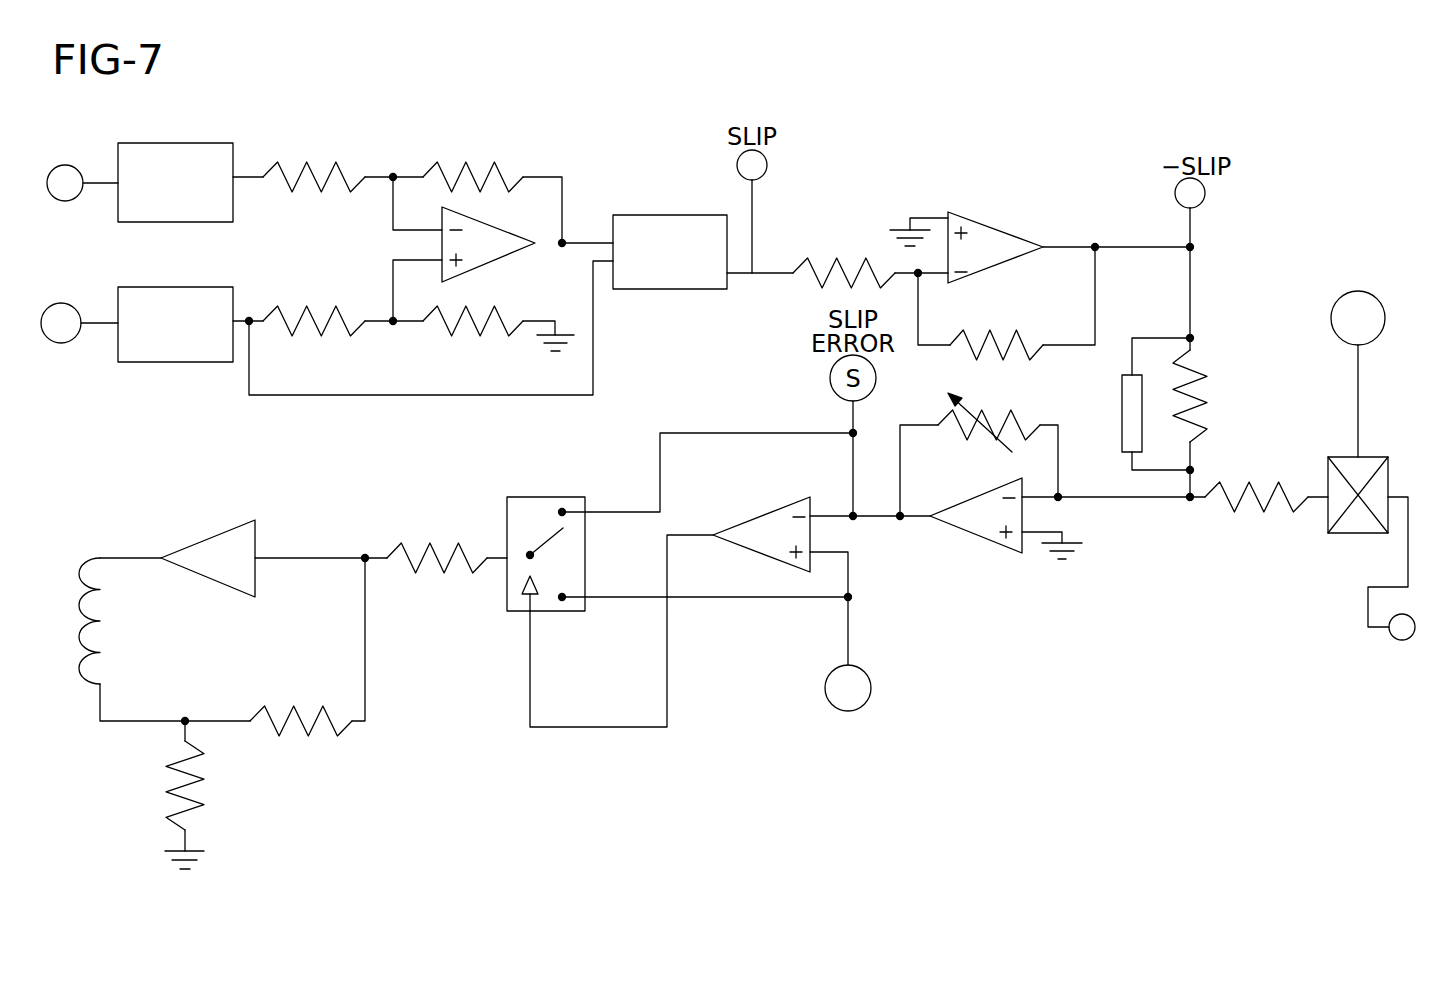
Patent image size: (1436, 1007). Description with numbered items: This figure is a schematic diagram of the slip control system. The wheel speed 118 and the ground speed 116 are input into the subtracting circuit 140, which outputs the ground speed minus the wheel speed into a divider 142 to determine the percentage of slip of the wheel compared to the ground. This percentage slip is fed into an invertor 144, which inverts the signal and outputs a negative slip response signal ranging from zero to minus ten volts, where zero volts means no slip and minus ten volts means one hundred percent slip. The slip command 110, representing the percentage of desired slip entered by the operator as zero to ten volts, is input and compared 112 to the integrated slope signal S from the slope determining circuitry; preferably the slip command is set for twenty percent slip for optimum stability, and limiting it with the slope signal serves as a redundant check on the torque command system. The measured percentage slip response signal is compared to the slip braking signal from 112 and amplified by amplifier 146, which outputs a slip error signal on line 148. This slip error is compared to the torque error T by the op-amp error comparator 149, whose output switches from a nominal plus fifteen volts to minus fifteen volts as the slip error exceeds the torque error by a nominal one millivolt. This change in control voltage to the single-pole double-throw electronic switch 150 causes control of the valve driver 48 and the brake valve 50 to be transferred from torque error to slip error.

The wheel speed 118 is at (234, 148).
The ground speed 116 is at (235, 300).
The subtracting circuit 140 is at (506, 216).
The divider 142 is at (611, 228).
The invertor 144 is at (970, 212).
The line 148 is at (875, 515).
The single-pole double-throw electronic switch 150 is at (535, 497).
The valve driver 48 is at (254, 522).
The brake valve 50 is at (146, 639).
The slip command comparison 112 is at (1342, 457).
The slip command 110 is at (1375, 607).
The amplifier 146 is at (983, 538).
The error comparator 149 is at (783, 563).